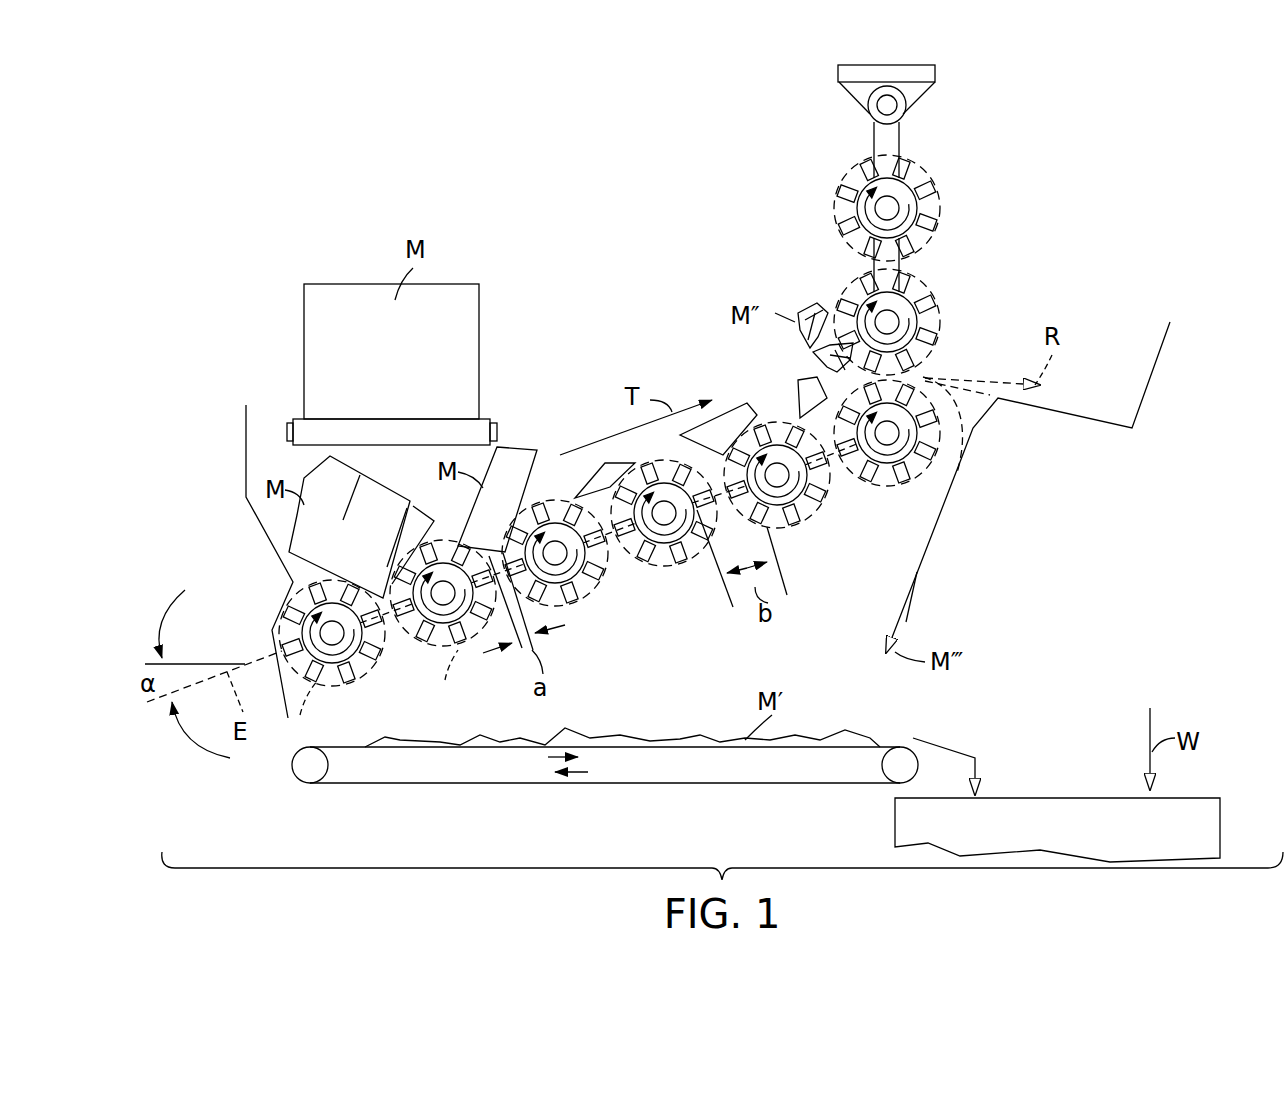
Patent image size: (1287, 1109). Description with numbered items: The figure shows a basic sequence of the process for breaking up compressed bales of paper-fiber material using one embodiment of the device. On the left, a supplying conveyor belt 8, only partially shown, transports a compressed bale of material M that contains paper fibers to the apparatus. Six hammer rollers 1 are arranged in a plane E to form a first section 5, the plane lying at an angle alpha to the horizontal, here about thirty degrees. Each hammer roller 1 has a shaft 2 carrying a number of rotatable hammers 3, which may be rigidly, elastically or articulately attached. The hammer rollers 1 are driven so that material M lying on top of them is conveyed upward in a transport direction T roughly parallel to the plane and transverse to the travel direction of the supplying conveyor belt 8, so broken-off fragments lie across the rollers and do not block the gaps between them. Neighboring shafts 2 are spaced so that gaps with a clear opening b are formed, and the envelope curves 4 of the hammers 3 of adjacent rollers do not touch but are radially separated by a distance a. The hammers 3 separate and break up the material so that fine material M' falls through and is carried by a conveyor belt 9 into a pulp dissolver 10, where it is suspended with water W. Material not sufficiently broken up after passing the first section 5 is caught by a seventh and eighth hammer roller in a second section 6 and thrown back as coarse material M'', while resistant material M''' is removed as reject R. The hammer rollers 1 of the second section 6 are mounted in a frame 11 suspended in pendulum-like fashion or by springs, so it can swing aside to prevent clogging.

The hammer roller 1 is at (330, 700).
The shaft 2 is at (598, 567).
The hammer 3 is at (437, 648).
The envelope curve 4 is at (374, 696).
The first section 5 is at (1012, 512).
The second section 6 is at (1018, 306).
The supplying conveyor belt 8 is at (302, 422).
The conveyor belt 9 is at (467, 770).
The pulp dissolver 10 is at (903, 828).
The frame 11 is at (895, 142).